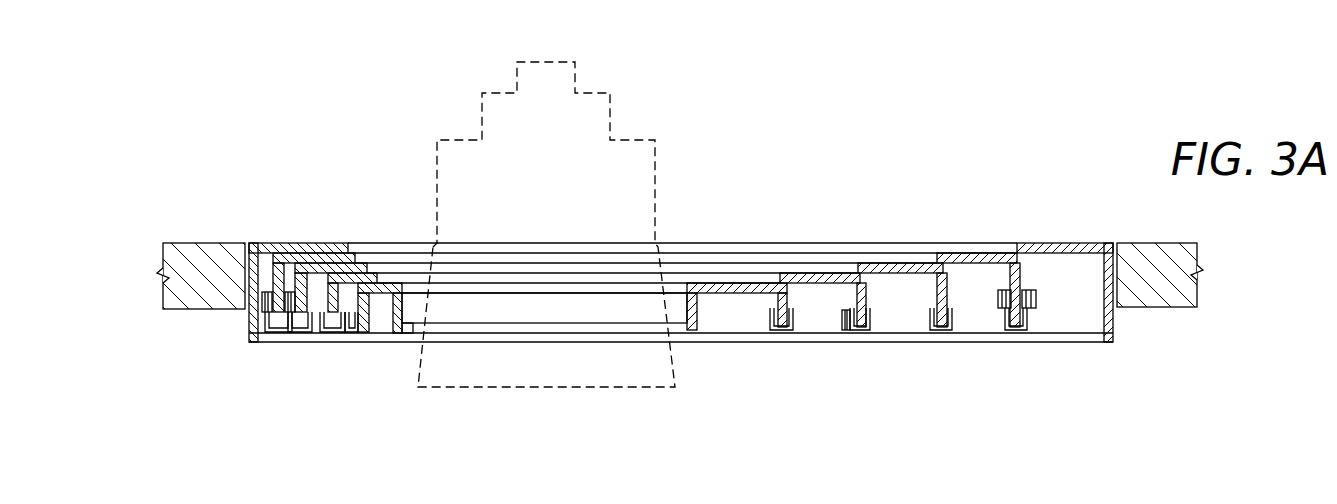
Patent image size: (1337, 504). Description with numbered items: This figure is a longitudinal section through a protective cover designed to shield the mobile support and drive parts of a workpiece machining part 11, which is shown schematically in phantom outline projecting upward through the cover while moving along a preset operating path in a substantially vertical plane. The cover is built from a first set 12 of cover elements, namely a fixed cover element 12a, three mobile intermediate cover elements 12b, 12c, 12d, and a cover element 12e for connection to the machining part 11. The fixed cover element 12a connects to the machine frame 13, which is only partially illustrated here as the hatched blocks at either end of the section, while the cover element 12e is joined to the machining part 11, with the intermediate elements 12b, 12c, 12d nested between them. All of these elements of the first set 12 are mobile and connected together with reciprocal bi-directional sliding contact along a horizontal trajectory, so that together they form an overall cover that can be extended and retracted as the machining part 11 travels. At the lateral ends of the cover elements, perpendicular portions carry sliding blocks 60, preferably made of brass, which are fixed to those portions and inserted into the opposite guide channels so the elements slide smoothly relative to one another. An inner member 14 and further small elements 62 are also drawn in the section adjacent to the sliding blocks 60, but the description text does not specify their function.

The machining part 11 is at (562, 178).
The first set of cover elements 12 is at (328, 240).
The fixed cover element 12a is at (1062, 240).
The mobile intermediate cover element 12b is at (972, 250).
The mobile intermediate cover element 12c is at (883, 261).
The mobile intermediate cover element 12d is at (805, 271).
The cover element for connection to the machining part 12e is at (721, 281).
The machine frame 13 is at (202, 278).
The inner plate 14 is at (542, 326).
The sliding blocks 60 is at (268, 330).
The bearing/roller element 62 is at (265, 290).